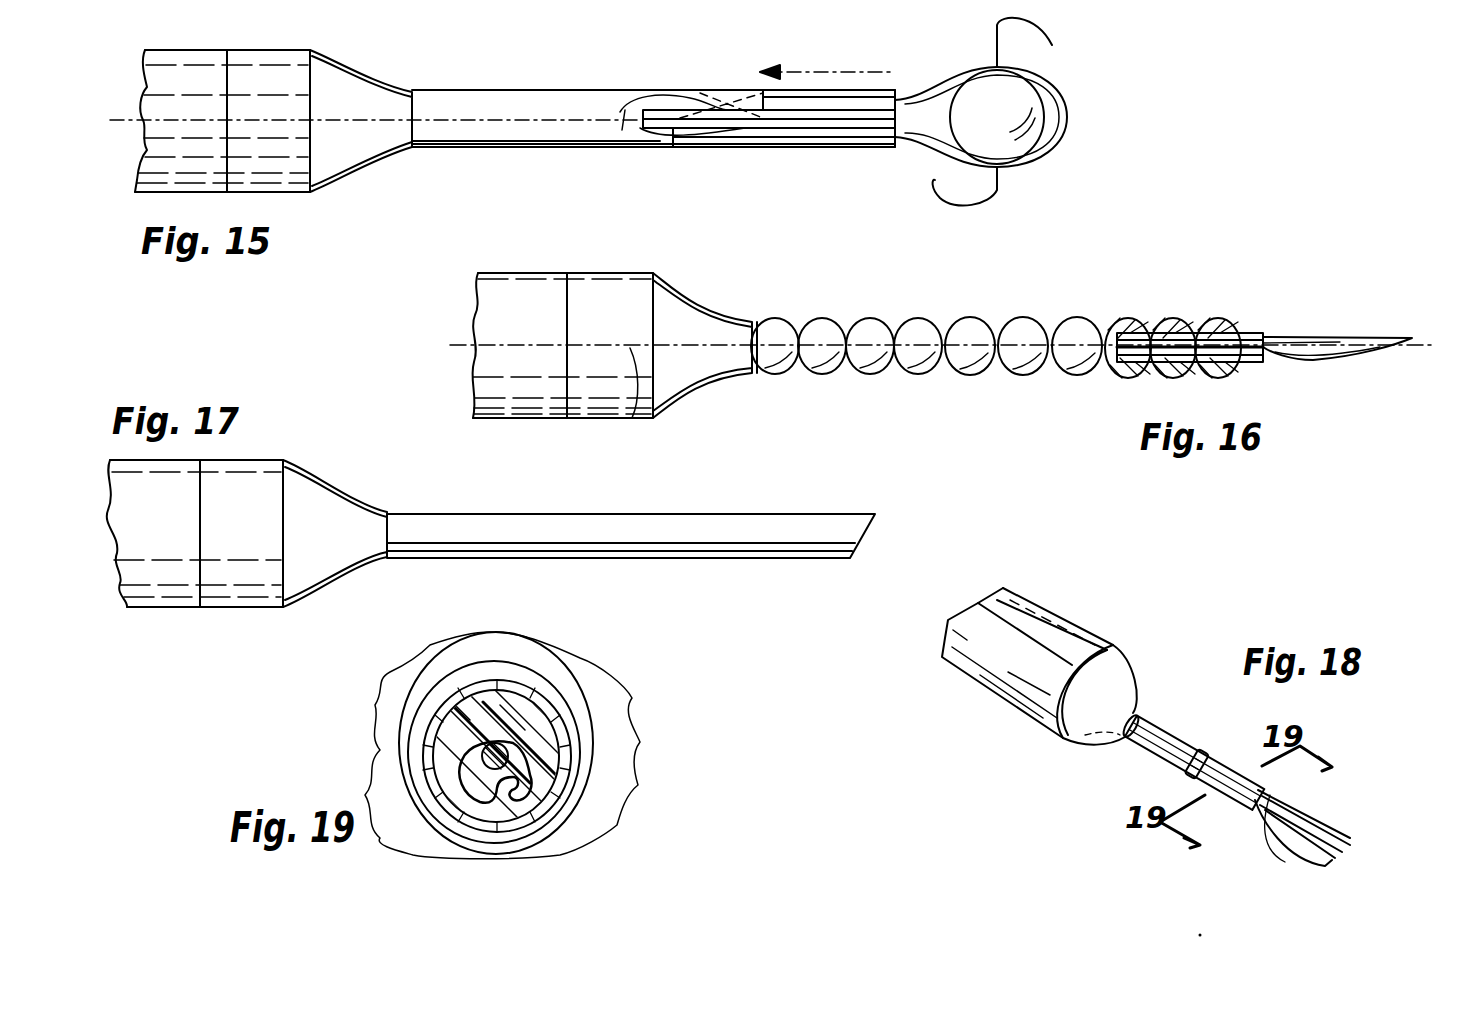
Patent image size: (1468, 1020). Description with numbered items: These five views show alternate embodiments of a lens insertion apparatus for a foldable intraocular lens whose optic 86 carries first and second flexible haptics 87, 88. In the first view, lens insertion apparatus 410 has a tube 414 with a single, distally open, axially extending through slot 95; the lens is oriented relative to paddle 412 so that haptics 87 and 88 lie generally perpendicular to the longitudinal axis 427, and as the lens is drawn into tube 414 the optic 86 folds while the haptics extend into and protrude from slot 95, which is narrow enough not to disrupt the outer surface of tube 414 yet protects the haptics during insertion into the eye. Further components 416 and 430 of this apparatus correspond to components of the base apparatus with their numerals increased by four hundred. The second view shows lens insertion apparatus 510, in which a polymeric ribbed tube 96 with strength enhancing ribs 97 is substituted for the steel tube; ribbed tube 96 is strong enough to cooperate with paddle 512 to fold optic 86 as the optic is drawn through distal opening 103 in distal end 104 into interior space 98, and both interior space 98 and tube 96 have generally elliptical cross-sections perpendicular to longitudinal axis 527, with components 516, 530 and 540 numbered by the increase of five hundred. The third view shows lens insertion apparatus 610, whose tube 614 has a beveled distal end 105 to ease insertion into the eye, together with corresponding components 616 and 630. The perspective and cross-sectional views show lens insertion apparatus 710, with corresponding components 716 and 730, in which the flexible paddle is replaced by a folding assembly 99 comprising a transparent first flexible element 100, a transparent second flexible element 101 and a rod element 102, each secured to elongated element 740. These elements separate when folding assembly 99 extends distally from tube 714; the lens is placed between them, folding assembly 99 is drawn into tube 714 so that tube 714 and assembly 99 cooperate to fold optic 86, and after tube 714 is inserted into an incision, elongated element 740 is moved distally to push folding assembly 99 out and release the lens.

In FIG. 15, the lens insertion apparatus 410 is at (516, 57).
In FIG. 15, the paddle 412 is at (930, 148).
In FIG. 15, the tube 414 is at (462, 148).
In FIG. 15, the hub 416 is at (192, 94).
In FIG. 15, the longitudinal axis 427 is at (138, 122).
In FIG. 15, the funnel portion 430 is at (350, 72).
In FIG. 15, the optic 86 is at (1030, 113).
In FIG. 19, the optic 86 is at (448, 710).
In FIG. 15, the first flexible haptic 87 is at (672, 140).
In FIG. 15, the second flexible haptic 88 is at (690, 100).
In FIG. 15, the through slot 95 is at (815, 128).
In FIG. 16, the lens insertion apparatus 510 is at (1128, 285).
In FIG. 16, the paddle 512 is at (1348, 358).
In FIG. 16, the hub 516 is at (540, 320).
In FIG. 16, the longitudinal axis 527 is at (622, 418).
In FIG. 16, the funnel portion 530 is at (762, 272).
In FIG. 16, the distal tube 540 is at (1226, 333).
In FIG. 16, the ribbed tube 96 is at (1012, 312).
In FIG. 16, the ribs 97 is at (848, 290).
In FIG. 16, the interior space 98 is at (1160, 330).
In FIG. 16, the distal opening 103 is at (1248, 332).
In FIG. 16, the distal end 104 is at (1240, 362).
In FIG. 17, the lens insertion apparatus 610 is at (365, 418).
In FIG. 17, the tube 614 is at (556, 487).
In FIG. 17, the hub 616 is at (180, 556).
In FIG. 17, the funnel portion 630 is at (345, 497).
In FIG. 17, the distal end 105 is at (875, 535).
In FIG. 18, the lens insertion apparatus 710 is at (962, 730).
In FIG. 18, the tube 714 is at (1125, 748).
In FIG. 19, the tube 714 is at (420, 773).
In FIG. 18, the hub 716 is at (1006, 676).
In FIG. 18, the funnel portion 730 is at (1120, 680).
In FIG. 19, the funnel portion 730 is at (543, 682).
In FIG. 18, the elongated element 740 is at (1195, 752).
In FIG. 18, the folding assembly 99 is at (1328, 795).
In FIG. 18, the first flexible element 100 is at (1338, 825).
In FIG. 19, the first flexible element 100 is at (560, 765).
In FIG. 18, the second flexible element 101 is at (1290, 848).
In FIG. 19, the second flexible element 101 is at (403, 740).
In FIG. 18, the rod element 102 is at (1320, 855).
In FIG. 19, the rod element 102 is at (560, 828).